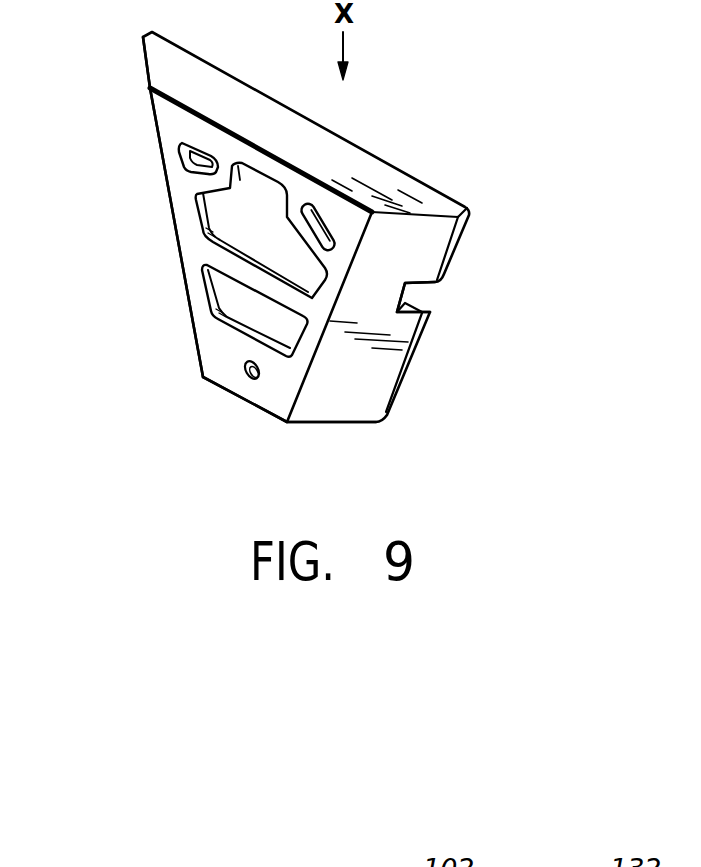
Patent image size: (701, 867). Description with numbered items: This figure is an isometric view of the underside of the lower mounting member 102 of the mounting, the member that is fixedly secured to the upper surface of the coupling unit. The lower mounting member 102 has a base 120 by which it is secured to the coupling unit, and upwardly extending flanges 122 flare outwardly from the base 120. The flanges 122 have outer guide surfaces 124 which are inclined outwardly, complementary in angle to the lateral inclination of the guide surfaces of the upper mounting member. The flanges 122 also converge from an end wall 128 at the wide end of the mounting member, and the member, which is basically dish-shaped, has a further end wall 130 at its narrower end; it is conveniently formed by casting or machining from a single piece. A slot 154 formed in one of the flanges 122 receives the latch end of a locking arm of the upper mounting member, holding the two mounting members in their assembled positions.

The lower mounting member 102 is at (197, 327).
The base 120 is at (235, 350).
The flanges 122 is at (353, 398).
The outer guide surfaces 124 is at (155, 140).
The end wall 128 is at (357, 162).
The end wall 130 is at (261, 412).
The slot 154 is at (425, 297).